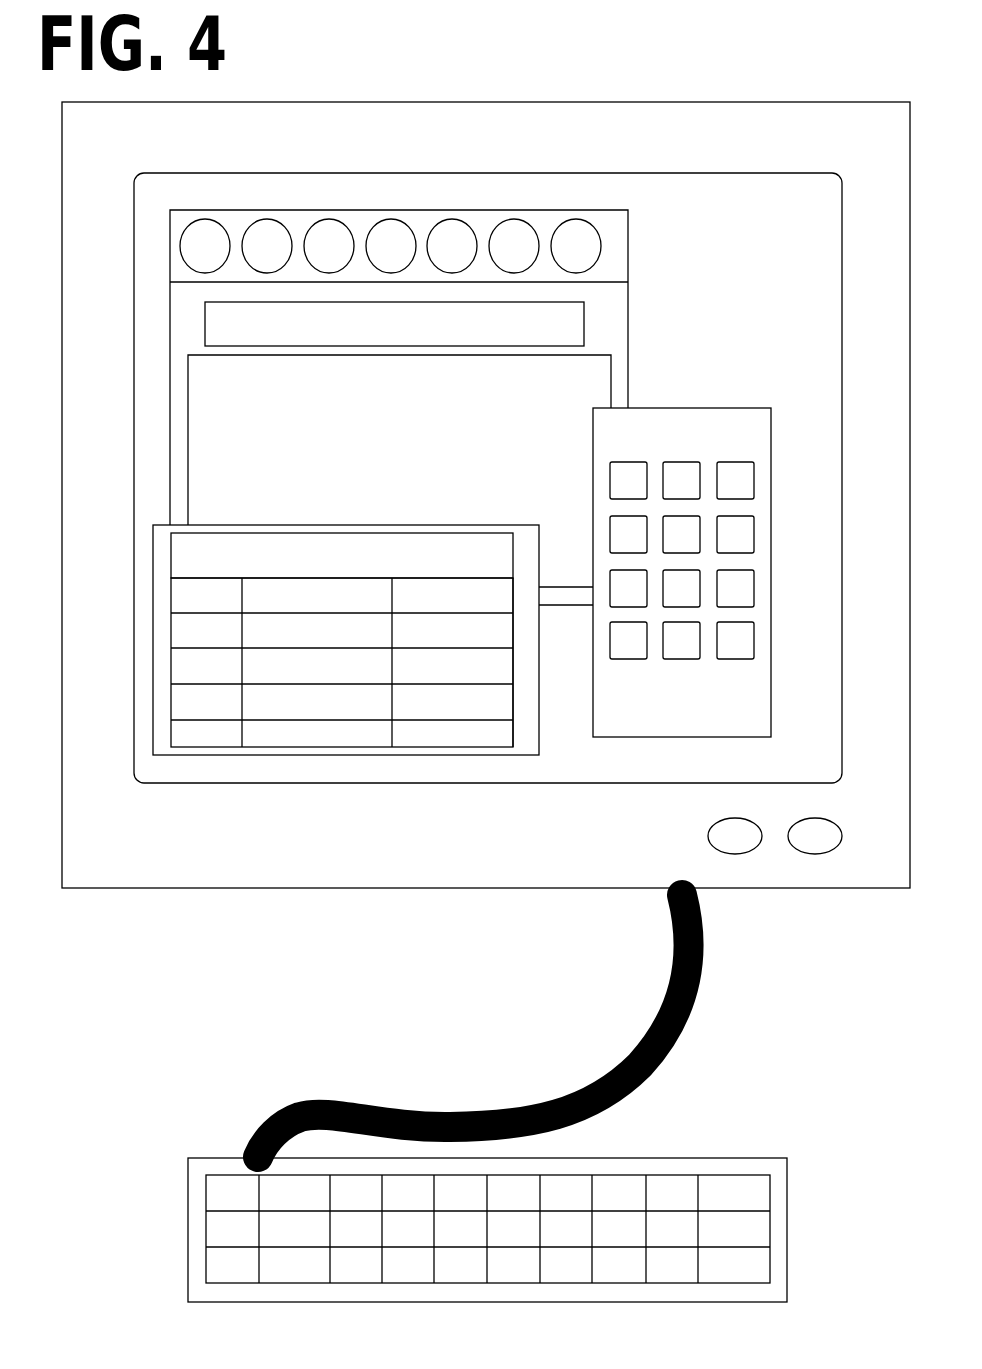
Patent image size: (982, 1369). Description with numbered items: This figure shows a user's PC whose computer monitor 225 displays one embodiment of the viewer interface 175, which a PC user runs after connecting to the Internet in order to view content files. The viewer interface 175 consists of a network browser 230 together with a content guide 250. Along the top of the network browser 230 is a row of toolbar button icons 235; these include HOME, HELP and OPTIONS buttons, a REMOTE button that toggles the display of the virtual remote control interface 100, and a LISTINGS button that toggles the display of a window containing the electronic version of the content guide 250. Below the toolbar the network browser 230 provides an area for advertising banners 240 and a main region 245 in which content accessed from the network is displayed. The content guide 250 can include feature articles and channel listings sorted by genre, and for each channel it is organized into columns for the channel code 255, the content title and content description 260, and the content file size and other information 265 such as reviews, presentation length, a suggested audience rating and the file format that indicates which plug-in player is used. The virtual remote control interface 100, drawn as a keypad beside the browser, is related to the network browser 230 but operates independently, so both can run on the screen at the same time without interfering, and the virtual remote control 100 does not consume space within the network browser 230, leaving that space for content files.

The computer monitor 225 is at (486, 449).
The viewer interface 175 is at (785, 222).
The network browser 230 is at (461, 367).
The toolbar button icons 235 is at (186, 257).
The advertising banners area 240 is at (249, 335).
The main region 245 is at (340, 440).
The content guide 250 is at (331, 636).
The channel code column 255 is at (223, 642).
The content title and content description column 260 is at (285, 642).
The content file size and other information column 265 is at (435, 642).
The virtual remote control interface 100 is at (692, 529).